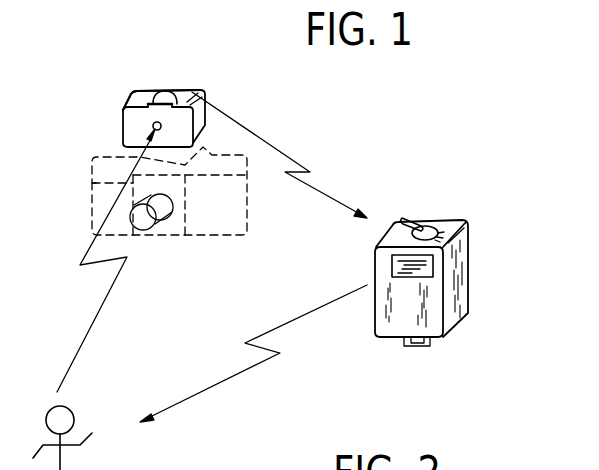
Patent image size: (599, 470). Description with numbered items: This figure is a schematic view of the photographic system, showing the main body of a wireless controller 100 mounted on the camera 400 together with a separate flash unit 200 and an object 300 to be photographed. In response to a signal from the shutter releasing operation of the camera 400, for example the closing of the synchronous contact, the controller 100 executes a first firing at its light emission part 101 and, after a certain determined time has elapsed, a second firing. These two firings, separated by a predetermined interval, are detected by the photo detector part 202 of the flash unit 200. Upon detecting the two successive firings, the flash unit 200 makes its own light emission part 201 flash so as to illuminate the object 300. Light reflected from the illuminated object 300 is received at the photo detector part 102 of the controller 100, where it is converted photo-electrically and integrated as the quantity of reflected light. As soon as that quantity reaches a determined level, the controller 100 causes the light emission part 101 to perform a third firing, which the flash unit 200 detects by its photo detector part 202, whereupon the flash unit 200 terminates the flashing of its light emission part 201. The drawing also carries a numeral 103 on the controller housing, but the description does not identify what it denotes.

The wireless controller 100 is at (207, 103).
The light emission part 101 is at (167, 92).
The photo detector part 102 is at (153, 127).
The housing top surface 103 is at (137, 103).
The flash unit 200 is at (462, 258).
The light emission part 201 is at (390, 263).
The photo detector part 202 is at (415, 220).
The object 300 is at (65, 455).
The camera 400 is at (207, 207).